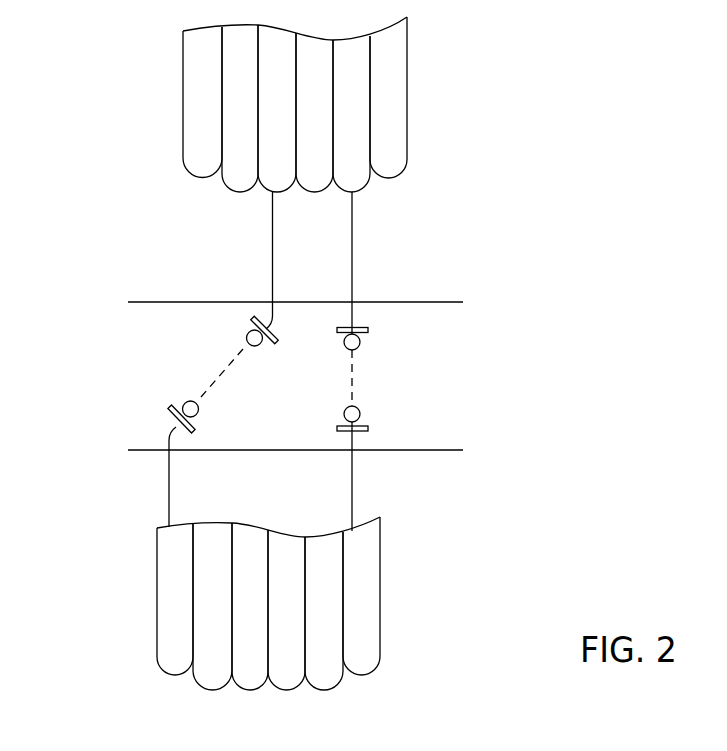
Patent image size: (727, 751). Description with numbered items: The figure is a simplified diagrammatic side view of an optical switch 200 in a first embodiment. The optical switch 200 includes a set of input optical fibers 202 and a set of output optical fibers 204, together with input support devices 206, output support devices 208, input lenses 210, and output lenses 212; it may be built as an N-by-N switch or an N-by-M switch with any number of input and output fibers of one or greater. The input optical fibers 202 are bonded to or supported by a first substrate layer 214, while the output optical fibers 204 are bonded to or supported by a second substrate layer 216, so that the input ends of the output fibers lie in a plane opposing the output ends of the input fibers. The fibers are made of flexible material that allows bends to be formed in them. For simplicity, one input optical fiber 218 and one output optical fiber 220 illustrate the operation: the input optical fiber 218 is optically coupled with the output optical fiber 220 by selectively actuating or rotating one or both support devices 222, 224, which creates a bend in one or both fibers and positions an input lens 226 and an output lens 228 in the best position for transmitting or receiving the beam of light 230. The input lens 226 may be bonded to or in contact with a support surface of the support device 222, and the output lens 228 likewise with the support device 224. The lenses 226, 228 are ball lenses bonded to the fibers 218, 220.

The optical switch 200 is at (110, 85).
The input optical fibers 202 is at (422, 81).
The output optical fibers 204 is at (395, 588).
The input support devices 206 is at (387, 329).
The output support devices 208 is at (381, 430).
The input lenses 210 is at (377, 348).
The output lenses 212 is at (377, 408).
The first substrate layer 214 is at (440, 302).
The second substrate layer 216 is at (420, 450).
The input optical fiber 218 is at (272, 246).
The output optical fiber 220 is at (169, 490).
The support device 222 is at (252, 320).
The support device 224 is at (170, 415).
The input lens 226 is at (246, 339).
The output lens 228 is at (183, 402).
The beam of light 230 is at (219, 379).